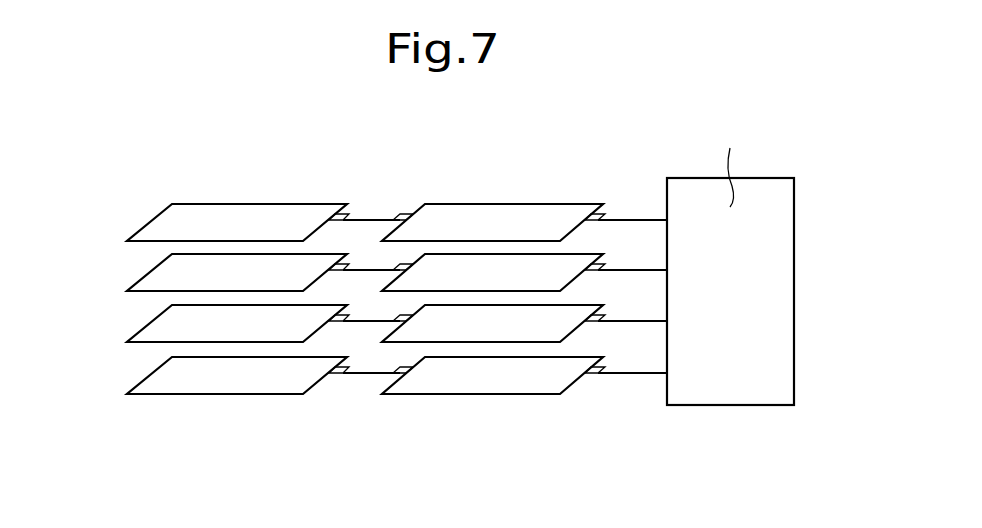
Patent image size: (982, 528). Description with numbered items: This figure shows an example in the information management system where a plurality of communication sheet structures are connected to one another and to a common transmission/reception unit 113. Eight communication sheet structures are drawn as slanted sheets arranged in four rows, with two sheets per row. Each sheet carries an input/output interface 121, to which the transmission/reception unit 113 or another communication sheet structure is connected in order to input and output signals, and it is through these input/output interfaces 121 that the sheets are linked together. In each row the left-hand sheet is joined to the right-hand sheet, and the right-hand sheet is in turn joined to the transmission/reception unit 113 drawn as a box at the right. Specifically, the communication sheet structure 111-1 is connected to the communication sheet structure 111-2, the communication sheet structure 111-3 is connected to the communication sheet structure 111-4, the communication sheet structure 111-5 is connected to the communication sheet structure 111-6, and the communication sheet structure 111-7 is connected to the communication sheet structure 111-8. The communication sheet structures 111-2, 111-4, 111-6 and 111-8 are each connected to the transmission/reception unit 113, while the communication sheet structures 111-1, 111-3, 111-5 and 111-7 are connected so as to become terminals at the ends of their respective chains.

The communication sheet structure 111-1 is at (245, 204).
The communication sheet structure 111-2 is at (488, 204).
The communication sheet structure 111-3 is at (149, 273).
The communication sheet structure 111-4 is at (523, 254).
The communication sheet structure 111-5 is at (150, 323).
The communication sheet structure 111-6 is at (584, 324).
The communication sheet structure 111-7 is at (149, 375).
The communication sheet structure 111-8 is at (577, 380).
The input/output interface 121 is at (350, 214).
The transmission/reception unit 113 is at (707, 406).